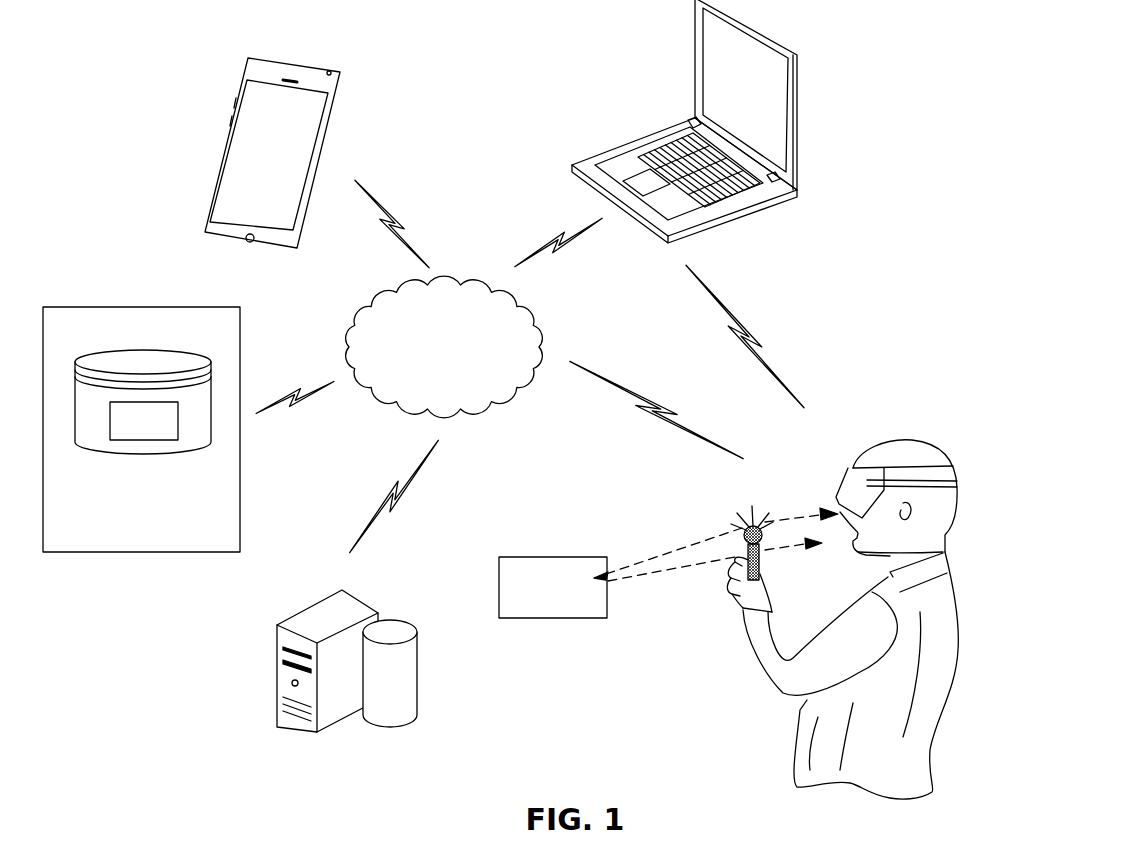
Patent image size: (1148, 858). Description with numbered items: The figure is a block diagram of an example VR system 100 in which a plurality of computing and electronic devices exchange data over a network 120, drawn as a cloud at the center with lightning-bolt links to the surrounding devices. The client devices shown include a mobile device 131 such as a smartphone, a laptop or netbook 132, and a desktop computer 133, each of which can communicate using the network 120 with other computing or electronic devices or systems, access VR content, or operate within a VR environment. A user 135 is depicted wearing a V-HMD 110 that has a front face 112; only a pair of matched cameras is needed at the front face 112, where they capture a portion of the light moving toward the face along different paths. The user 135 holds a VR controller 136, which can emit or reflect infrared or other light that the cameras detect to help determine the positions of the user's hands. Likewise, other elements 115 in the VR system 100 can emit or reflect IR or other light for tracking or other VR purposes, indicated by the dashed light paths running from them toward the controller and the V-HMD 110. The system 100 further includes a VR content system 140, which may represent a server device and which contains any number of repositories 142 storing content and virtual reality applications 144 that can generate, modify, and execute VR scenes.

The VR system 100 is at (148, 50).
The V-HMD 110 is at (884, 484).
The front face 112 is at (818, 512).
The other elements 115 is at (536, 598).
The network 120 is at (428, 367).
The mobile device 131 is at (321, 148).
The laptop or netbook 132 is at (603, 152).
The desktop computer 133 is at (320, 601).
The user 135 is at (790, 777).
The VR controller 136 is at (748, 548).
The VR content system 140 is at (97, 337).
The repositories 142 is at (164, 347).
The virtual reality applications 144 is at (128, 430).